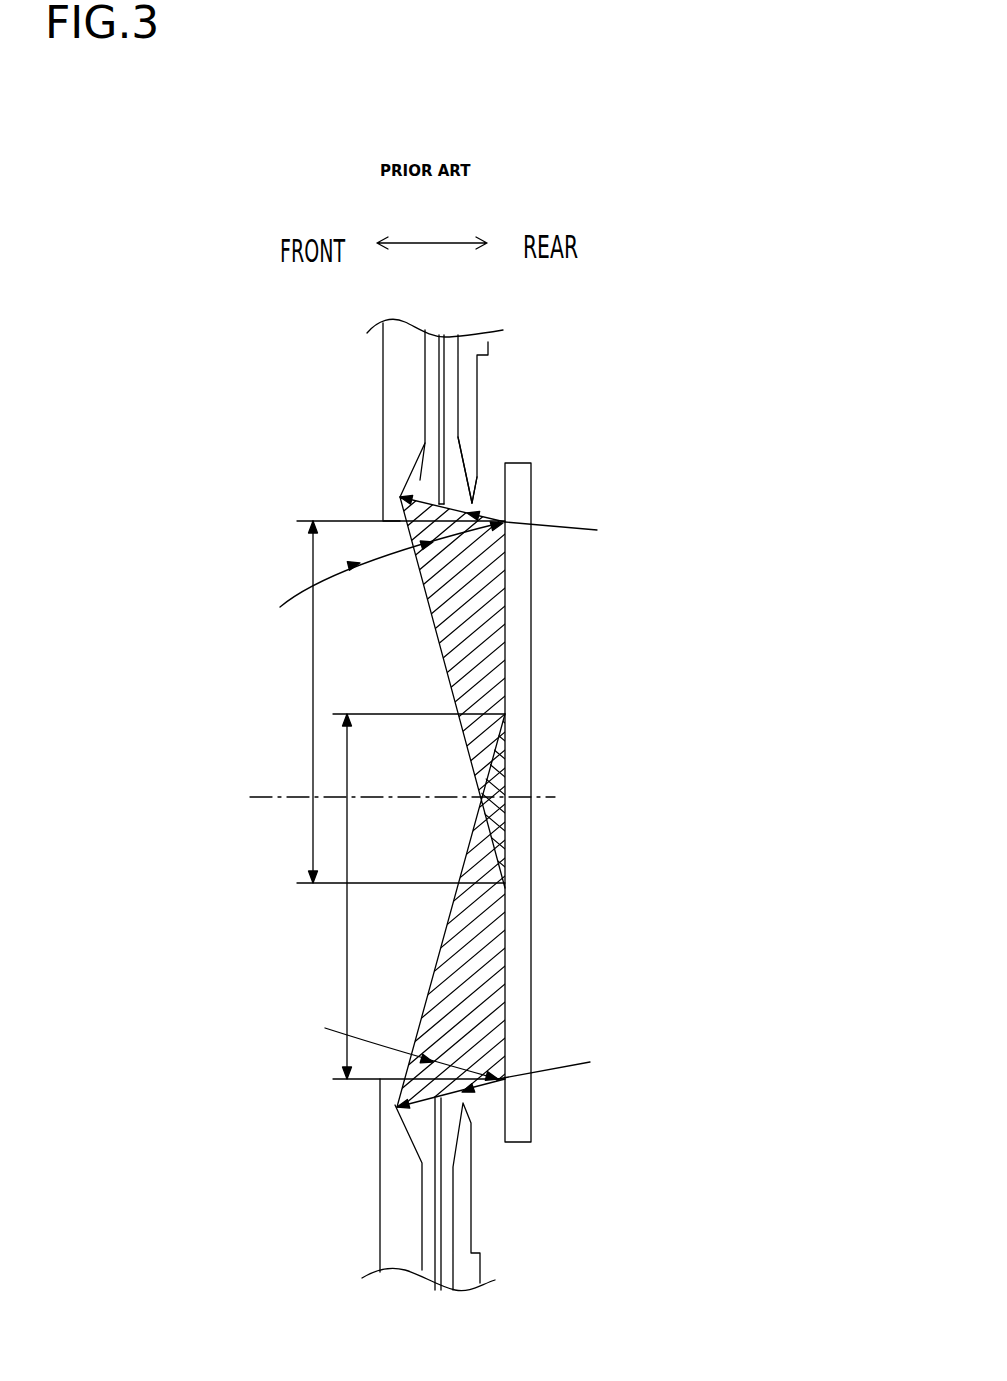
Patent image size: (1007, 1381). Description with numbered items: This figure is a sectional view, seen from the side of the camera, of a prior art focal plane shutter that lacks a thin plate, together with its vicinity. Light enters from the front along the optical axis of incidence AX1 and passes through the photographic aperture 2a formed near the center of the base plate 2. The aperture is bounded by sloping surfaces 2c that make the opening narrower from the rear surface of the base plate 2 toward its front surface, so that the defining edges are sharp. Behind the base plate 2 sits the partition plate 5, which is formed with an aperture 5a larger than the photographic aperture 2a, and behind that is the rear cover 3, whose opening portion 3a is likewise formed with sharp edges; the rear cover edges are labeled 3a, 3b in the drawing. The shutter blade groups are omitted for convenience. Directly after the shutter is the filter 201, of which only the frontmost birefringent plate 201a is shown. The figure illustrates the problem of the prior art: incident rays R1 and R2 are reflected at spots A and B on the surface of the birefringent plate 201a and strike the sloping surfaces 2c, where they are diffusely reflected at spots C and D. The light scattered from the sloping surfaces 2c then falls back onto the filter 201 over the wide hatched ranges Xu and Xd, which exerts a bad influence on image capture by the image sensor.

The base plate 2 is at (395, 353).
The photographic aperture 2a is at (383, 520).
The sloping surfaces 2c is at (420, 480).
The rear cover 3 is at (488, 343).
The opening portion 3a is at (473, 482).
The edge of rear plate 3b is at (465, 470).
The partition plate 5 is at (442, 347).
The aperture 5a is at (442, 503).
The filter 201 is at (640, 802).
The birefringent plate 201a is at (516, 582).
The spot A is at (563, 527).
The spot B is at (558, 1059).
The spot C is at (400, 497).
The spot D is at (397, 1107).
The incident ray R1 is at (364, 584).
The incident ray R2 is at (386, 1046).
The range xu Xu is at (397, 702).
The range xd Xd is at (415, 896).
The optical axis of incidence AX1 is at (250, 797).